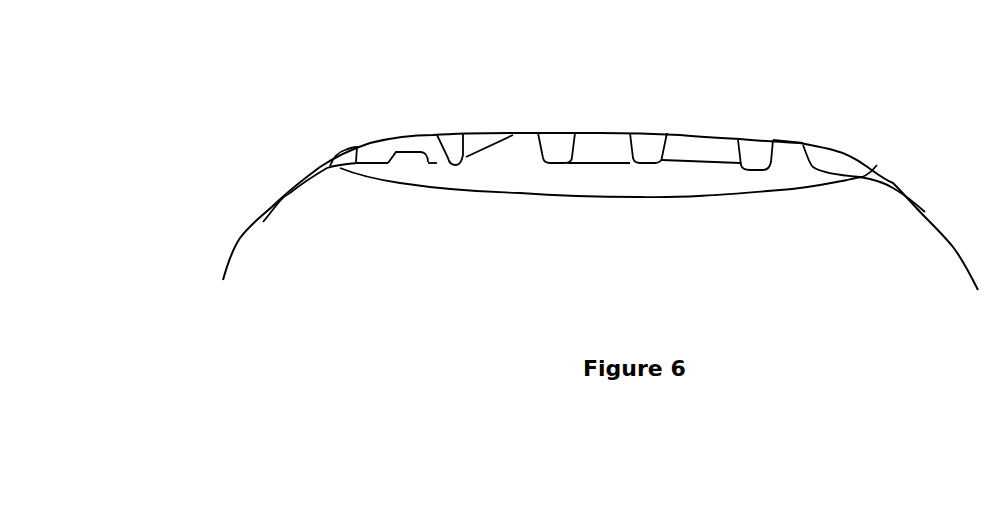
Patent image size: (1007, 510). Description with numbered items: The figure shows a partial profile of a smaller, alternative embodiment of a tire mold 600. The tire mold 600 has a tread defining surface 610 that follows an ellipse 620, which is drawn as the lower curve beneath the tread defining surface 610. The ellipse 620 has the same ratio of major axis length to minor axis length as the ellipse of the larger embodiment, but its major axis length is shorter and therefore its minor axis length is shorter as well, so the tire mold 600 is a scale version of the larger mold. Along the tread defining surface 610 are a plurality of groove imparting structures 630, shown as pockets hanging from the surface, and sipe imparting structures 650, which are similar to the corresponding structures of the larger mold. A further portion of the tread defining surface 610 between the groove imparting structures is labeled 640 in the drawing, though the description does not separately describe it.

The tire mold 600 is at (250, 110).
The tread defining surface 610 is at (602, 135).
The ellipse 620 is at (797, 192).
The groove imparting structures 630 is at (750, 152).
The shelf surface 640 is at (698, 137).
The sipe imparting structures 650 is at (477, 150).